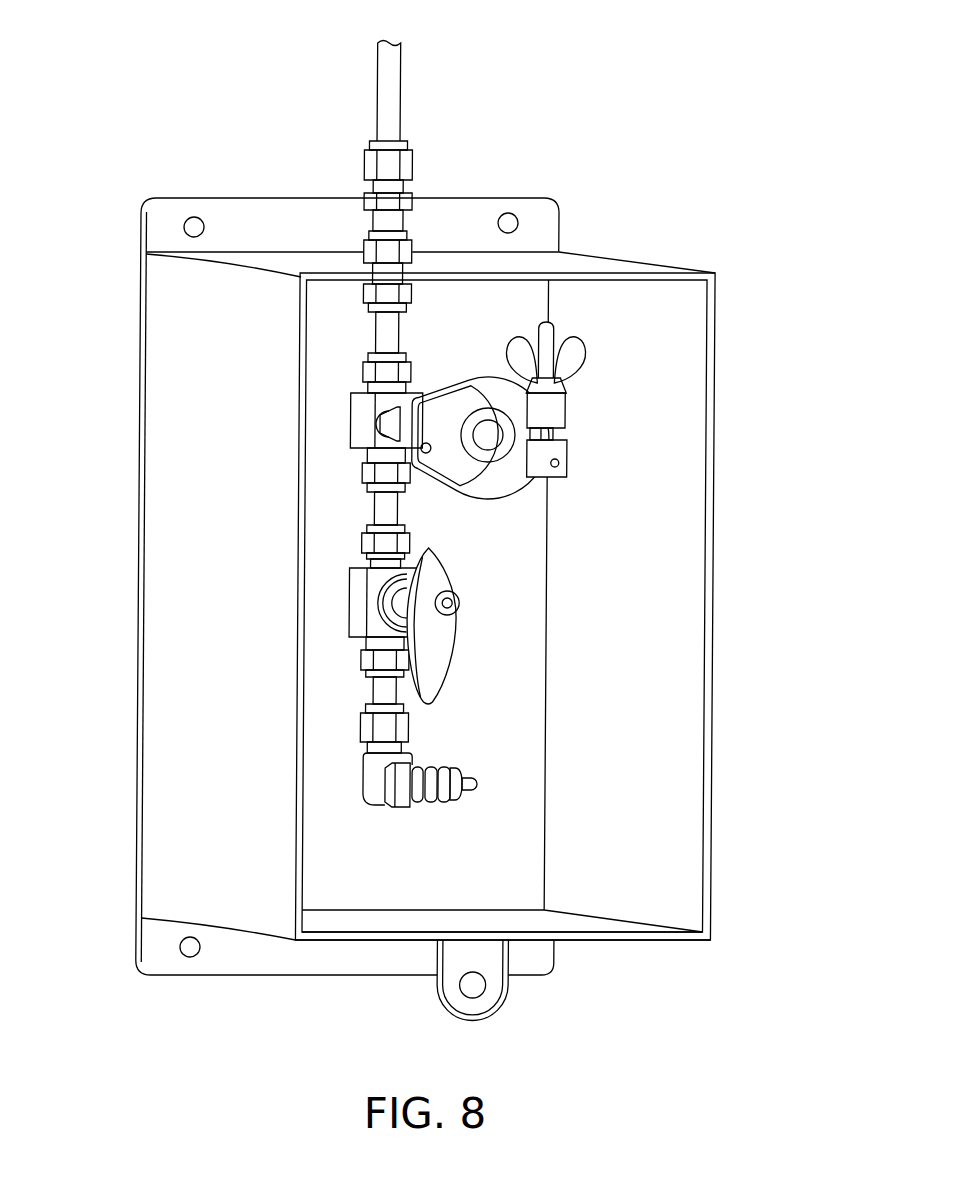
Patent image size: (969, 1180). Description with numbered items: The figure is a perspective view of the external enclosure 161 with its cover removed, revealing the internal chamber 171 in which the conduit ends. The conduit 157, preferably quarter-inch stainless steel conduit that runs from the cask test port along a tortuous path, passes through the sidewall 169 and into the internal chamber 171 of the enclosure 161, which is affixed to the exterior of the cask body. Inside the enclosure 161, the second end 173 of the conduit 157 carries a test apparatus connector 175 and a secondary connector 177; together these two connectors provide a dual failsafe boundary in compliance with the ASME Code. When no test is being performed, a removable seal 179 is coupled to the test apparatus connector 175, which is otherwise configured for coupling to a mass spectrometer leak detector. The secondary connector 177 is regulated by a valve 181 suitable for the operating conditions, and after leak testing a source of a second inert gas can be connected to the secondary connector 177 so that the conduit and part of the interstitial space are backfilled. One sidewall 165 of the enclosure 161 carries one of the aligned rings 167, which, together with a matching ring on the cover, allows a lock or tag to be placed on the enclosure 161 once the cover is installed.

The conduit 157 is at (401, 90).
The enclosure 161 is at (472, 619).
The sidewall 165 is at (392, 922).
The aligned rings 167 is at (507, 1003).
The sidewall 169 is at (294, 262).
The internal chamber 171 is at (505, 859).
The second end of the conduit 173 is at (378, 330).
The test apparatus connector 175 is at (386, 428).
The secondary connector 177 is at (388, 790).
The removable seal 179 is at (555, 410).
The valve 181 is at (461, 602).